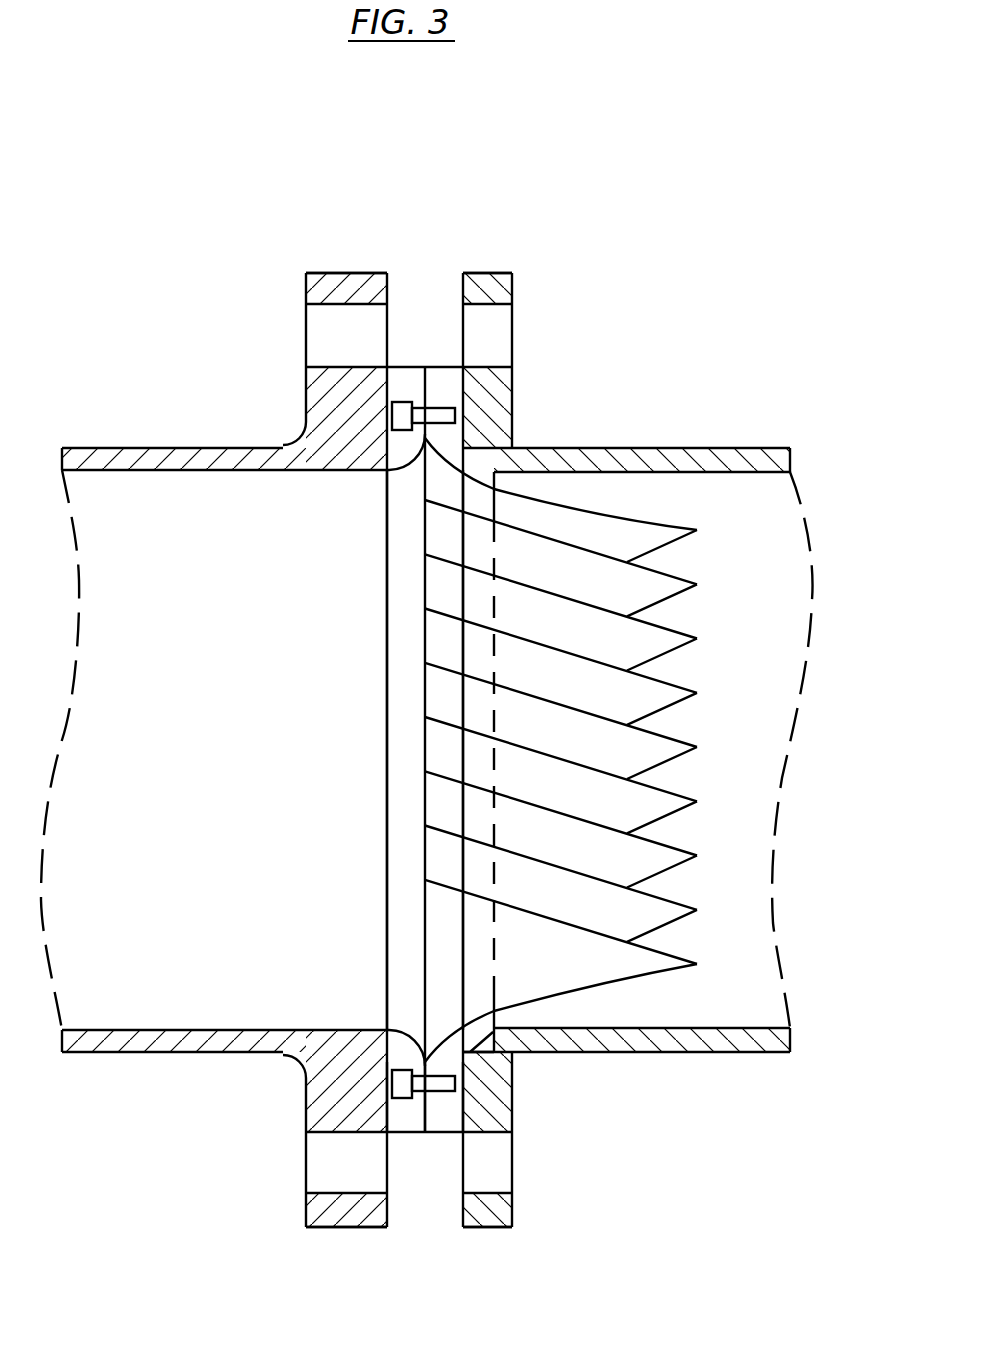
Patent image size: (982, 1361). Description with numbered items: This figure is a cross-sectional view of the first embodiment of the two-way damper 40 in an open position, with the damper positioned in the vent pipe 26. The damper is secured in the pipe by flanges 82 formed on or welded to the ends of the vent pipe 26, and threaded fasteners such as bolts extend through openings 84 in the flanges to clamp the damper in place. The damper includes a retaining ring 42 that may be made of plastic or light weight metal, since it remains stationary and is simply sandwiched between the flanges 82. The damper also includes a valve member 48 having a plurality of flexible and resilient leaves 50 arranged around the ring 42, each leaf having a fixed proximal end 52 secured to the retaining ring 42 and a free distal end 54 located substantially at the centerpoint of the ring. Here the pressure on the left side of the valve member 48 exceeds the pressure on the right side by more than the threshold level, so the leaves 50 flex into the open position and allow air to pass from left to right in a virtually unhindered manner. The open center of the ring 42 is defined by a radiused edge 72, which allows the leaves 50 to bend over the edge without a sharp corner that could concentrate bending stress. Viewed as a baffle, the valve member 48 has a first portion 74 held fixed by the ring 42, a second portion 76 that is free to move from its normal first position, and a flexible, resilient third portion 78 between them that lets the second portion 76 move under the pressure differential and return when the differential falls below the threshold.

The vent pipe 26 is at (155, 448).
The two-way damper 40 is at (454, 738).
The retaining ring 42 is at (407, 709).
The valve member 48 is at (423, 527).
The leaves 50 is at (618, 962).
The fixed proximal end 52 is at (452, 427).
The free distal end 54 is at (646, 764).
The radiused edge 72 is at (413, 1037).
The first portion 74 is at (433, 1108).
The second portion 76 is at (657, 960).
The third portion 78 is at (517, 1060).
The flanges 82 is at (352, 274).
The openings 84 is at (315, 325).